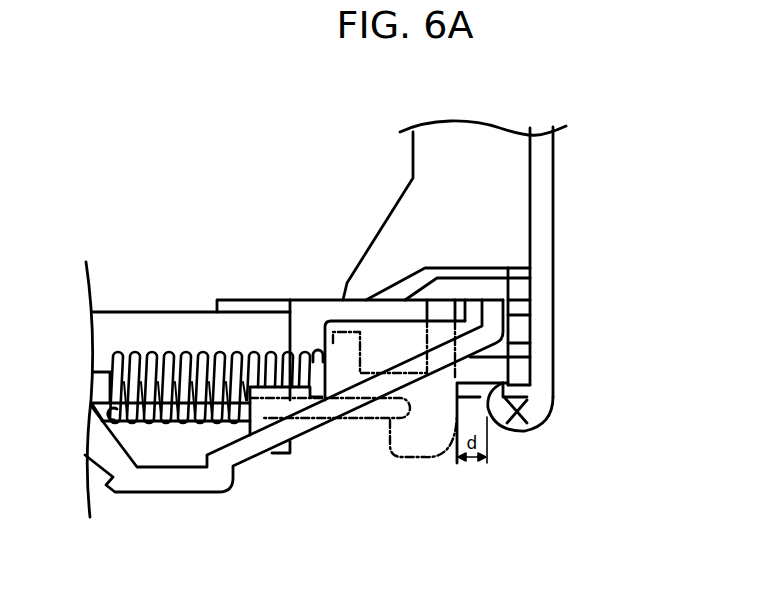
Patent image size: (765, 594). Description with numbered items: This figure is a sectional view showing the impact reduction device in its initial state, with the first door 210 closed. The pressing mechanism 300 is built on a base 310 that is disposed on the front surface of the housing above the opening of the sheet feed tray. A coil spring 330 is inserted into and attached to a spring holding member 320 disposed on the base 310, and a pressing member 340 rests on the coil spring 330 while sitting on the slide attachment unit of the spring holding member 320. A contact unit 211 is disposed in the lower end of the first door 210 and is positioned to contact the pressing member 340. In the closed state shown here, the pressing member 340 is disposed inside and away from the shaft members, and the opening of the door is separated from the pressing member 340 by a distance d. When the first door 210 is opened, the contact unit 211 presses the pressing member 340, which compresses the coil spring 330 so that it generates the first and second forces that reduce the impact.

The pressing mechanism 300 is at (256, 189).
The first door 210 is at (553, 217).
The contact unit 211 is at (512, 408).
The base 310 is at (292, 430).
The spring holding member 320 is at (100, 373).
The coil spring 330 is at (182, 352).
The pressing member 340 is at (430, 467).